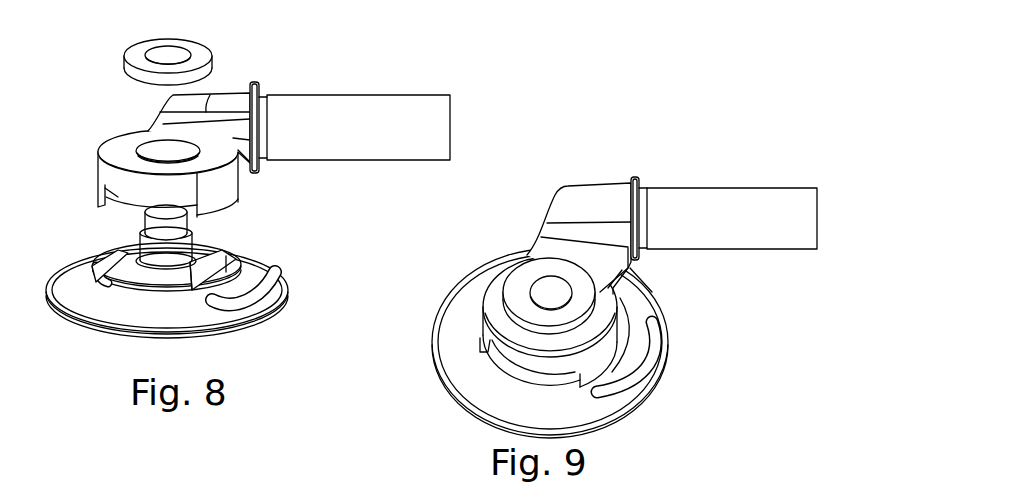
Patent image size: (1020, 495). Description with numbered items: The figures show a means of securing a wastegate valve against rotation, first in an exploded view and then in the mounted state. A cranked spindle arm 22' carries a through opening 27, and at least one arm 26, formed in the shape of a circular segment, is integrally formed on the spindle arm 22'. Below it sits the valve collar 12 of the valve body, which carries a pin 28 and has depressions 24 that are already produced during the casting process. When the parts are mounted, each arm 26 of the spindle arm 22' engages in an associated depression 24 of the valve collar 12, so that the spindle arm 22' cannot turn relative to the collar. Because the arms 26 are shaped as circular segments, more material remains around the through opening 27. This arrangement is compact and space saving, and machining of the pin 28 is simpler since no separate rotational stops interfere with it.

In FIG. 8, the valve collar 12 is at (128, 307).
In FIG. 9, the valve collar 12 is at (490, 402).
In FIG. 8, the spindle arm 22' is at (299, 104).
In FIG. 9, the spindle arm 22' is at (672, 212).
In FIG. 8, the depression 24 is at (98, 270).
In FIG. 9, the depression 24 is at (483, 352).
In FIG. 8, the arm 26 is at (100, 202).
In FIG. 9, the arm 26 is at (483, 303).
In FIG. 8, the through opening 27 is at (162, 157).
In FIG. 8, the pin 28 is at (150, 222).
In FIG. 9, the pin 28 is at (548, 295).